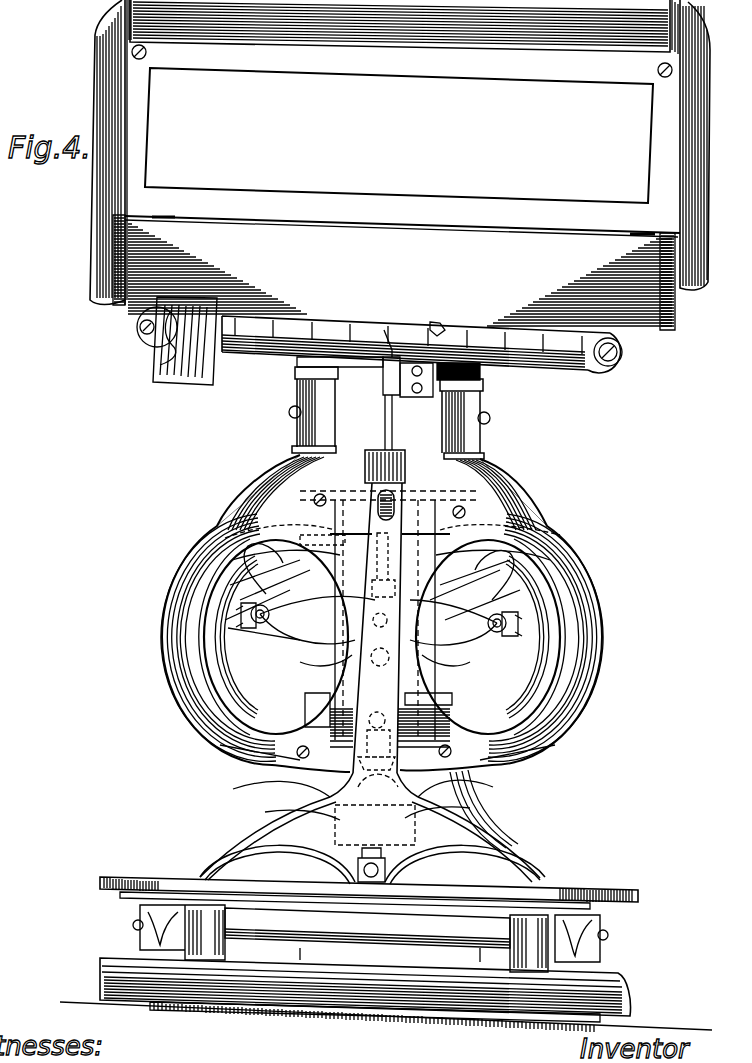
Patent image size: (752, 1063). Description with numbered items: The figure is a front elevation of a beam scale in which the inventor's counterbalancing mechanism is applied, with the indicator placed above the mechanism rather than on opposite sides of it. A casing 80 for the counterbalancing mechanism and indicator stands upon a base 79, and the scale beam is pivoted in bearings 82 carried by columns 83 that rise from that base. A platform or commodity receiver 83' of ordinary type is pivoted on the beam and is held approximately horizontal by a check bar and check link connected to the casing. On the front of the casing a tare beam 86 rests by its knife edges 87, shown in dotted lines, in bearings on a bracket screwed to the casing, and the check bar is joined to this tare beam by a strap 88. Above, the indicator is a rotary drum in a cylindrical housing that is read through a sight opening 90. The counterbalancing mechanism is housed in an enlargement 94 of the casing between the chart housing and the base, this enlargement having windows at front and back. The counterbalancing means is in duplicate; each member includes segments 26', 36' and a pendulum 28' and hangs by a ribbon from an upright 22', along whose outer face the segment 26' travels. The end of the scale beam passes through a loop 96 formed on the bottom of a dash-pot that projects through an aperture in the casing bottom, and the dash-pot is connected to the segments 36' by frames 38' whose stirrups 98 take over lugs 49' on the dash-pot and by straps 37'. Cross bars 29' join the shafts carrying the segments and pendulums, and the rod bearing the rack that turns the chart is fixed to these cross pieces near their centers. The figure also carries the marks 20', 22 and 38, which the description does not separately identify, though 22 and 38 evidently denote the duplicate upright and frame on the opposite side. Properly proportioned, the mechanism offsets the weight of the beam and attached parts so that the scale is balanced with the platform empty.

The sight opening 90 is at (400, 165).
The knife edges of the tare beam 87 is at (432, 327).
The tare beam 86 is at (566, 364).
The strap 88 is at (386, 421).
The casing 80 is at (600, 647).
The pendulum rod 22 is at (393, 596).
The upright 22' is at (332, 529).
The segment 26' is at (300, 607).
The lever arm 38 is at (317, 675).
The frame 38' is at (455, 685).
The neck of pedestal 20' is at (381, 490).
The segment 36' is at (388, 521).
The strap 37' is at (361, 527).
The cross bar 29' is at (199, 666).
The enlargement of the casing 94 is at (592, 584).
The pendulum 28' is at (387, 753).
The stirrup 98 is at (234, 790).
The lug 49' is at (374, 814).
The platform or commodity receiver 83' is at (404, 897).
The bearing 82 is at (600, 936).
The column 83 is at (386, 940).
The base 79 is at (618, 981).
The loop 96 is at (294, 1020).